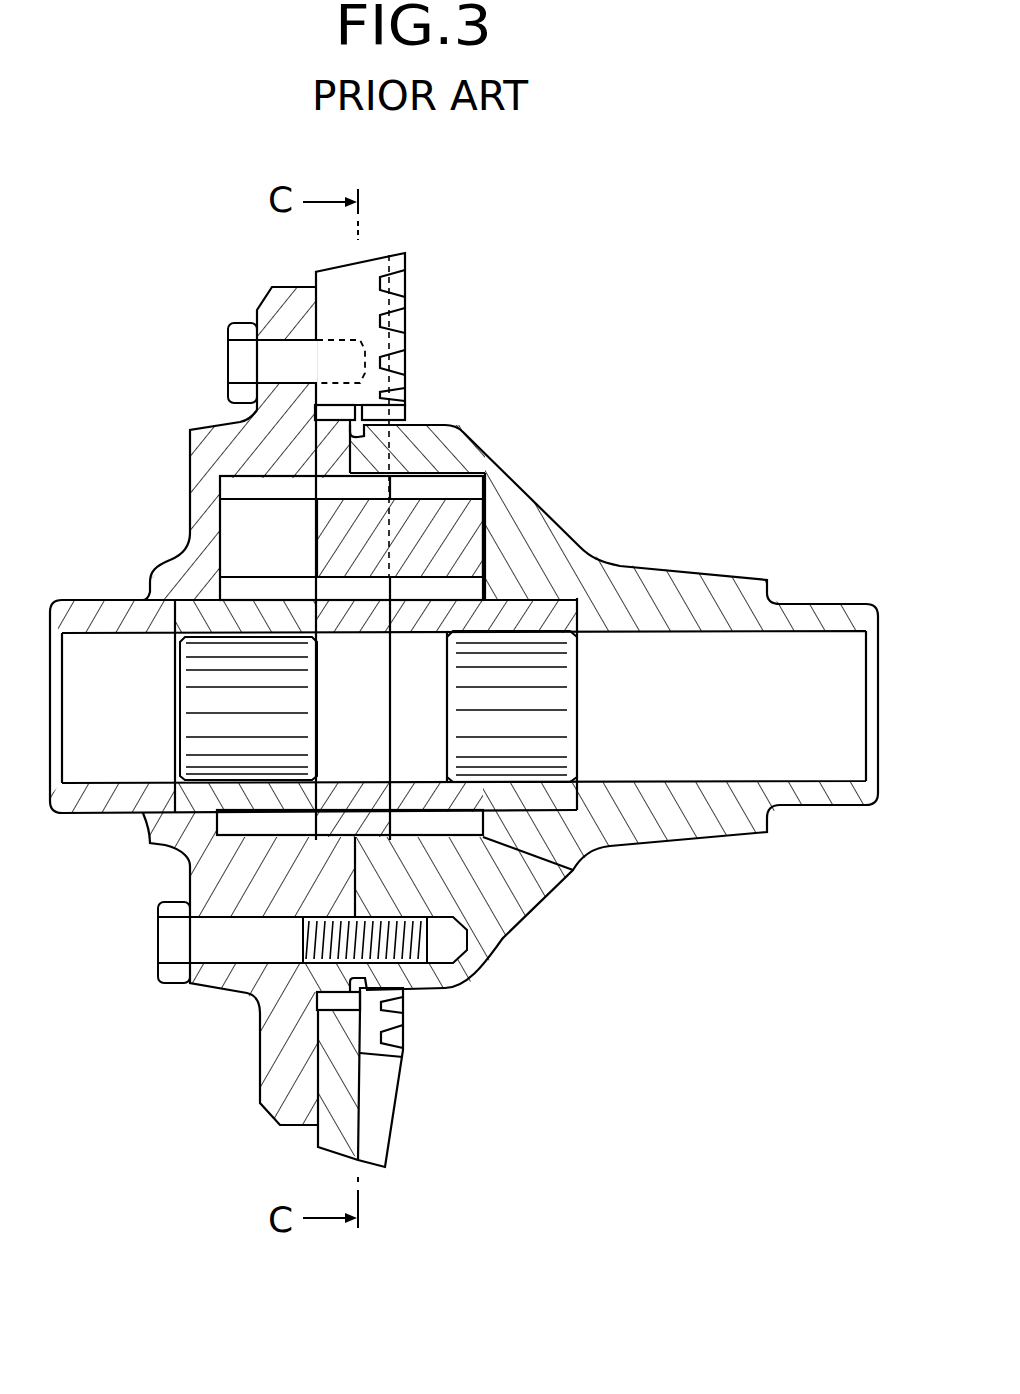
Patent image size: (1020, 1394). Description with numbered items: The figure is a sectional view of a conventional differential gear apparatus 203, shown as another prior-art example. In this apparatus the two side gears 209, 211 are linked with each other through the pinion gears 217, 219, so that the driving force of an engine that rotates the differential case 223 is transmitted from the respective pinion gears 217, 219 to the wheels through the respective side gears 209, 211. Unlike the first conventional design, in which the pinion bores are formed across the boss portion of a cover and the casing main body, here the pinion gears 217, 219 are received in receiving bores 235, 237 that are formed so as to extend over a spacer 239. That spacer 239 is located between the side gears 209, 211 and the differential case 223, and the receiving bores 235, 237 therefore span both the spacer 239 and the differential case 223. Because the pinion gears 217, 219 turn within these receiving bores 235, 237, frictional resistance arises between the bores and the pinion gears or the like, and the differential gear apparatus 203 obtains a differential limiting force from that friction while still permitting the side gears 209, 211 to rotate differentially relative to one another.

The differential gear apparatus 203 is at (658, 392).
The side gear 209 is at (172, 845).
The side gear 211 is at (497, 822).
The pinion gear 217 is at (225, 489).
The pinion gear 219 is at (428, 487).
The differential case 223 is at (268, 305).
The receiving bore 235 is at (268, 487).
The receiving bore 237 is at (458, 482).
The spacer 239 is at (346, 790).